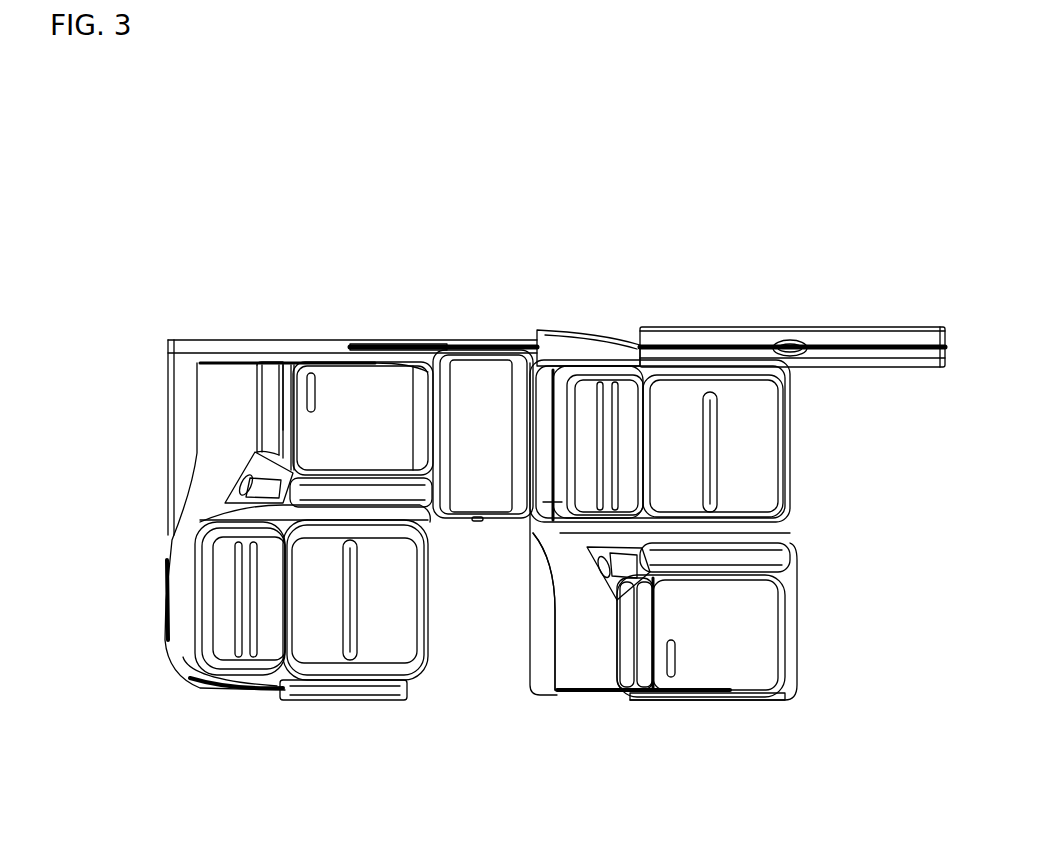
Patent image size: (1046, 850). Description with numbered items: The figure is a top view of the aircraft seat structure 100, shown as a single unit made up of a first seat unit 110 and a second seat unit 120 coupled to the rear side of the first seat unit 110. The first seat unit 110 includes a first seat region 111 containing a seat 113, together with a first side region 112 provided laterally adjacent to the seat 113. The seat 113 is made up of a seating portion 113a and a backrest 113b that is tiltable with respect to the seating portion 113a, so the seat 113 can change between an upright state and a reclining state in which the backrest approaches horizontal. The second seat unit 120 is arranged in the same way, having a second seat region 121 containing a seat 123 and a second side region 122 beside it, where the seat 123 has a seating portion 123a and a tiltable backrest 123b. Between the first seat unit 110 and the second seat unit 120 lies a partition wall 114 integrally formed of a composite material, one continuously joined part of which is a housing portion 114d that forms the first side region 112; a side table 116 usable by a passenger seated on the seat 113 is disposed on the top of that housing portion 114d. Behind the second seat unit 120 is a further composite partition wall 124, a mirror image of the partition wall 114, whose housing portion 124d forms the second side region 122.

The aircraft seat structure 100 is at (925, 283).
The first seat unit 110 is at (840, 534).
The first seat region 111 is at (825, 378).
The first side region 112 is at (822, 535).
The seat 113 is at (793, 377).
The seating portion 113a is at (677, 403).
The backrest 113b is at (626, 405).
The partition wall 114 is at (546, 637).
The housing portion 114d is at (795, 695).
The side table 116 is at (752, 680).
The second seat unit 120 is at (436, 540).
The second seat region 121 is at (148, 525).
The second side region 122 is at (142, 365).
The seat 123 is at (420, 672).
The seating portion 123a is at (330, 655).
The backrest 123b is at (267, 690).
The partition wall 124 is at (197, 390).
The housing portion 124d is at (452, 317).